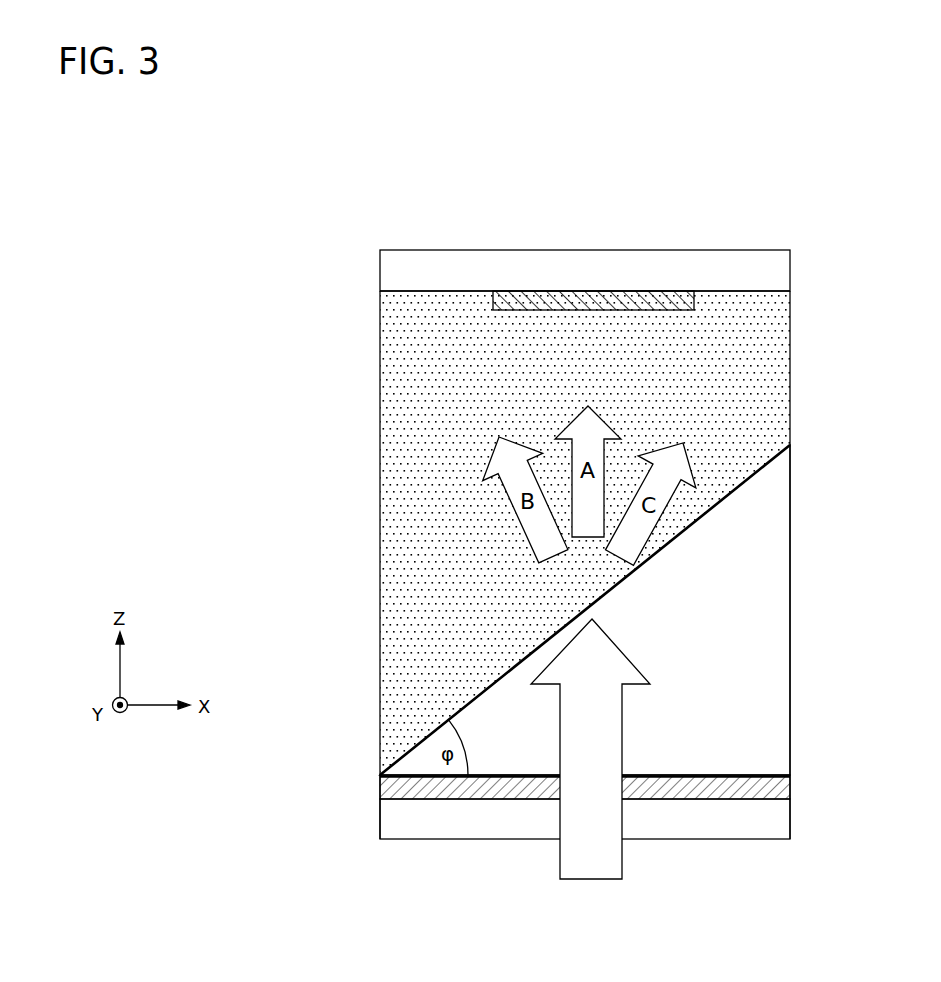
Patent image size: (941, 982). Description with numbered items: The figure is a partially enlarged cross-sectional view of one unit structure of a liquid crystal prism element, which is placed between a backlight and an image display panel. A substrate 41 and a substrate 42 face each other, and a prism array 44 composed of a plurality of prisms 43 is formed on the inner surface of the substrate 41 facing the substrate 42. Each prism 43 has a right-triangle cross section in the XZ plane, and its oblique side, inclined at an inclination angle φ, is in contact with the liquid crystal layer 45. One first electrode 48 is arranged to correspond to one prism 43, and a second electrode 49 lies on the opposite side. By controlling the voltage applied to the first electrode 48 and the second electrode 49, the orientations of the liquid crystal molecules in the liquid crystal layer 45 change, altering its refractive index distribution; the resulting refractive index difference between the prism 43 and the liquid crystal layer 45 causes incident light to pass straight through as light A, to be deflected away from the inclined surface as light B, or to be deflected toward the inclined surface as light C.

The substrate 41 is at (783, 272).
The substrate 42 is at (781, 826).
The prism 43 is at (645, 565).
The prism array 44 is at (789, 638).
The liquid crystal layer 45 is at (398, 446).
The first electrode 48 is at (592, 300).
The second electrode 49 is at (378, 787).